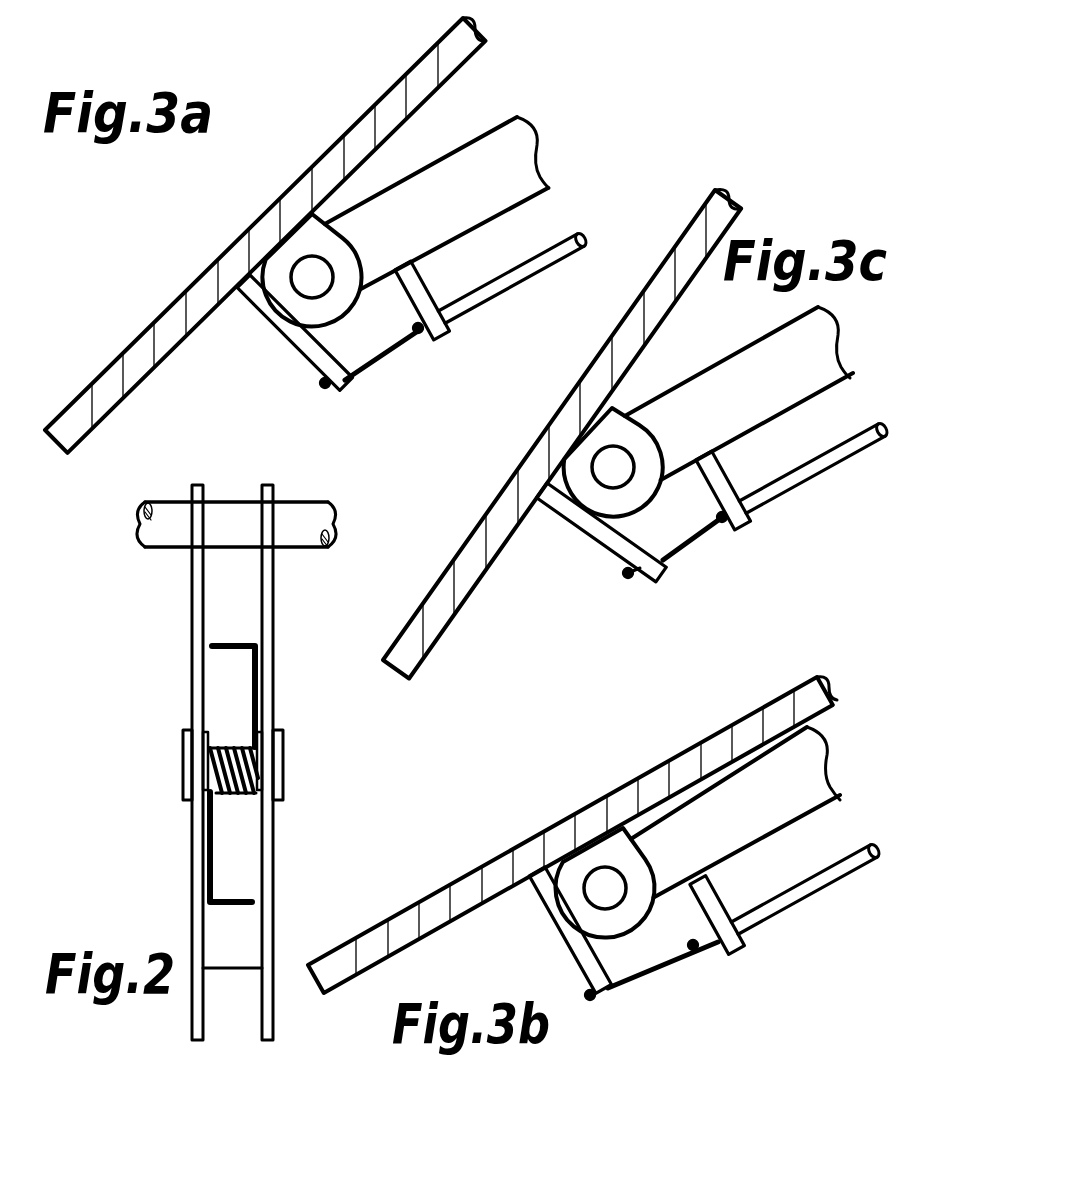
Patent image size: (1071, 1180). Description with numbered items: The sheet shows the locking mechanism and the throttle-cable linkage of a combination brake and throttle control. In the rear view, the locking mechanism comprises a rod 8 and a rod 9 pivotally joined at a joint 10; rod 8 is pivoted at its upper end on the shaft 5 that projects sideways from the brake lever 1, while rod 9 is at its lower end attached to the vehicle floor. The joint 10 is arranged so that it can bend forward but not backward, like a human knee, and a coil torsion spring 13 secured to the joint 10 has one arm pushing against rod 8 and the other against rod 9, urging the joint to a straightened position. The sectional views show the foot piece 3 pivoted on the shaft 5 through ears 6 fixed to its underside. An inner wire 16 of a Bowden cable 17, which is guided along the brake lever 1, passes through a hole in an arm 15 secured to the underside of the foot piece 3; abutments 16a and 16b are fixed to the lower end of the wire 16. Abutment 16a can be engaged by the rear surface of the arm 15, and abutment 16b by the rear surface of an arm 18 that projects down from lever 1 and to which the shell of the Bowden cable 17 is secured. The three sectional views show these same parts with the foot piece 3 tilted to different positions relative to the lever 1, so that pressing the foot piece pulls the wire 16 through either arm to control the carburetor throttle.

In FIG. 3a, the brake lever 1 is at (508, 173).
In FIG. 3c, the brake lever 1 is at (810, 363).
In FIG. 3b, the brake lever 1 is at (800, 783).
In FIG. 3a, the foot piece 3 is at (352, 130).
In FIG. 3c, the foot piece 3 is at (648, 312).
In FIG. 3b, the foot piece 3 is at (722, 748).
In FIG. 3a, the shaft 5 is at (310, 277).
In FIG. 3c, the shaft 5 is at (612, 468).
In FIG. 3b, the shaft 5 is at (603, 888).
In FIG. 2, the shaft 5 is at (297, 535).
In FIG. 3a, the ears 6 is at (312, 243).
In FIG. 3c, the ears 6 is at (615, 432).
In FIG. 3b, the ears 6 is at (618, 847).
In FIG. 2, the rod 8 is at (277, 658).
In FIG. 2, the rod 9 is at (270, 862).
In FIG. 2, the joint 10 is at (298, 772).
In FIG. 2, the coil torsion spring 13 is at (250, 703).
In FIG. 3a, the arm 15 is at (285, 337).
In FIG. 3c, the arm 15 is at (587, 527).
In FIG. 3b, the arm 15 is at (567, 933).
In FIG. 3a, the inner wire 16 is at (380, 357).
In FIG. 3c, the inner wire 16 is at (683, 548).
In FIG. 3b, the inner wire 16 is at (648, 975).
In FIG. 3a, the abutment 16a is at (326, 393).
In FIG. 3c, the abutment 16a is at (628, 580).
In FIG. 3b, the abutment 16a is at (590, 1003).
In FIG. 3a, the abutment 16b is at (420, 334).
In FIG. 3c, the abutment 16b is at (723, 527).
In FIG. 3b, the abutment 16b is at (700, 955).
In FIG. 3a, the Bowden cable 17 is at (532, 268).
In FIG. 3c, the Bowden cable 17 is at (832, 460).
In FIG. 3b, the Bowden cable 17 is at (813, 887).
In FIG. 3a, the arm 18 is at (437, 332).
In FIG. 3c, the arm 18 is at (740, 520).
In FIG. 3b, the arm 18 is at (735, 944).